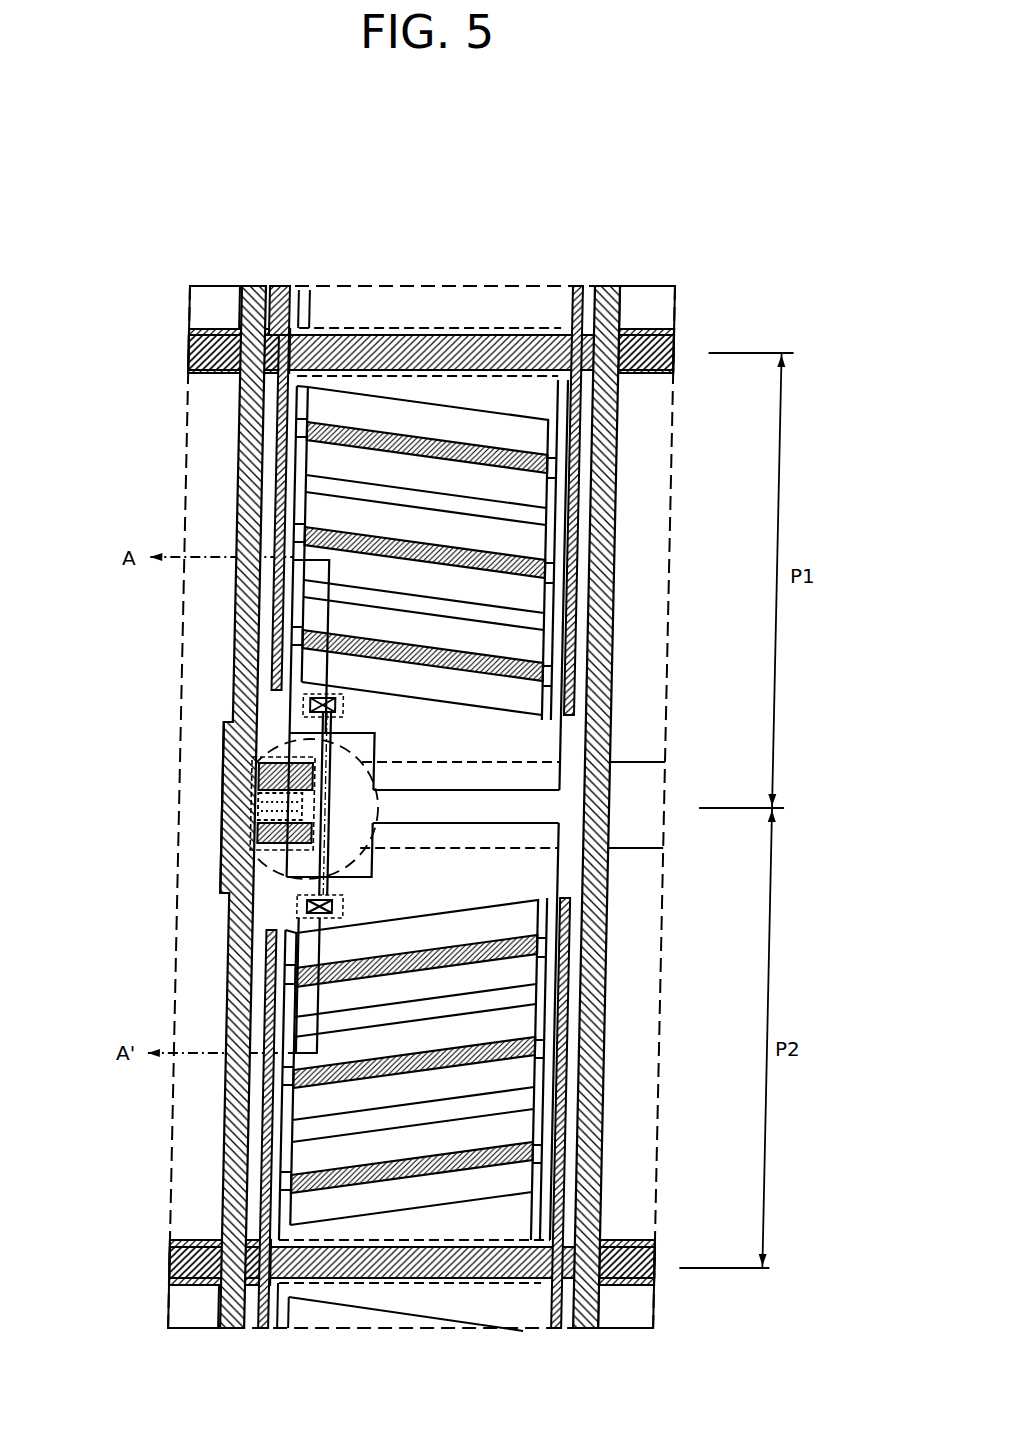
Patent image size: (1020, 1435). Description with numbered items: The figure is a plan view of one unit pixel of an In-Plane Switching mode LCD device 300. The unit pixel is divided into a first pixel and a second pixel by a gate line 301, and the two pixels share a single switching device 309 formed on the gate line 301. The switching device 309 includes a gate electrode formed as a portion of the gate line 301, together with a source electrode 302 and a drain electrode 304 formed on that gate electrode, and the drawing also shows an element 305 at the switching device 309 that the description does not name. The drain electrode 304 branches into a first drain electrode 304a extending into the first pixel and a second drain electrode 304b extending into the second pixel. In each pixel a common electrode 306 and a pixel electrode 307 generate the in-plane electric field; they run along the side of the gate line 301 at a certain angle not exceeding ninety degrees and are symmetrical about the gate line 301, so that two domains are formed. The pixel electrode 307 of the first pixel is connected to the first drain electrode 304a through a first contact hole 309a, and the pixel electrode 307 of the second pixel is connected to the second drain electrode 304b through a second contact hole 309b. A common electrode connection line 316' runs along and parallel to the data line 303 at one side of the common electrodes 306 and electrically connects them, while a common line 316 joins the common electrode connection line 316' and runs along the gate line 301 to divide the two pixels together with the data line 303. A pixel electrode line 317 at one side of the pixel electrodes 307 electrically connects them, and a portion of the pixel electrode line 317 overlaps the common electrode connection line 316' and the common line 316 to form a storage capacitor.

The LCD device 300 is at (147, 260).
The gate line 301 is at (633, 792).
The source electrode 302 is at (256, 779).
The data line 303 is at (252, 345).
The drain electrode 304 is at (290, 812).
The first drain electrode 304a is at (300, 741).
The second drain electrode 304b is at (280, 848).
The active layer 305 is at (278, 802).
The common electrode 306 is at (495, 660).
The pixel electrode 307 is at (510, 615).
The switching device 309 is at (373, 803).
The first contact hole 309a is at (306, 699).
The second contact hole 309b is at (300, 908).
The common line 316 is at (450, 813).
The common electrode connection line 316' is at (492, 807).
The pixel electrode line 317 is at (550, 485).